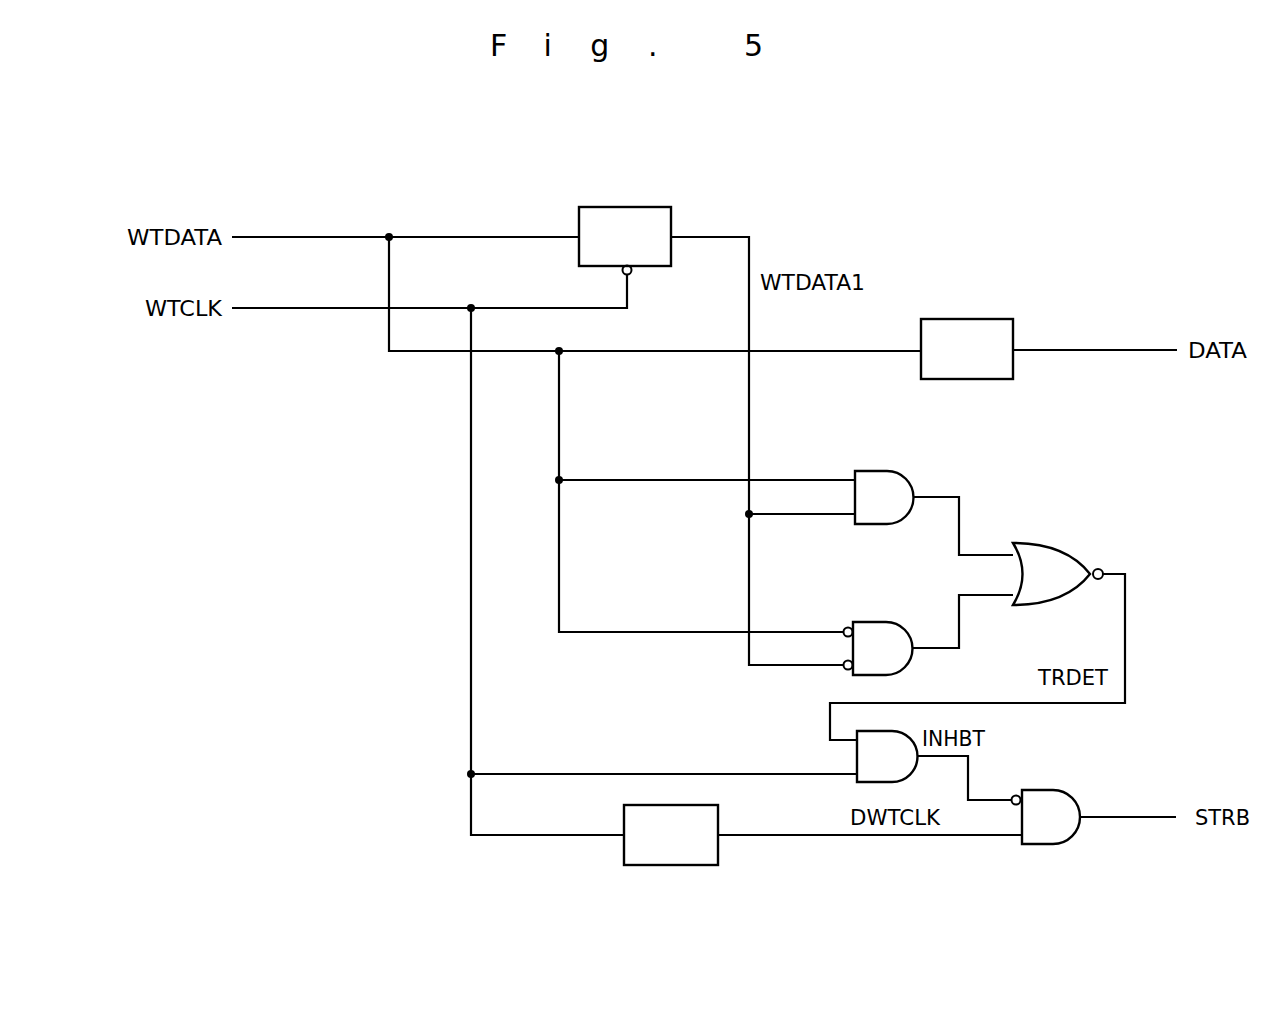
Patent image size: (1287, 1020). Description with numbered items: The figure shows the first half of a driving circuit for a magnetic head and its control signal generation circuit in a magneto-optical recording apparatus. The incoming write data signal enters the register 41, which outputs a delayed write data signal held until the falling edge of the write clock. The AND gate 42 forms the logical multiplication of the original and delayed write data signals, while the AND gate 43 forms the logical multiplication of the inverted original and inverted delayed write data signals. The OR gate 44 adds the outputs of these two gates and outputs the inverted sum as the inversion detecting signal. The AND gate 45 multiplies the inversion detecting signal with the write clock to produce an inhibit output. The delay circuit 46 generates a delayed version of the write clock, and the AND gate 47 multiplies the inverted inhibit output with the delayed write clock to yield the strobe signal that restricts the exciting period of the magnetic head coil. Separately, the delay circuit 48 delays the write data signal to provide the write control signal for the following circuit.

The register 41 is at (637, 207).
The AND gate 42 is at (880, 471).
The AND gate 43 is at (870, 622).
The OR gate 44 is at (1055, 543).
The AND gate 45 is at (857, 782).
The delay circuit 46 is at (720, 853).
The AND gate 47 is at (1078, 790).
The delay circuit 48 is at (978, 319).